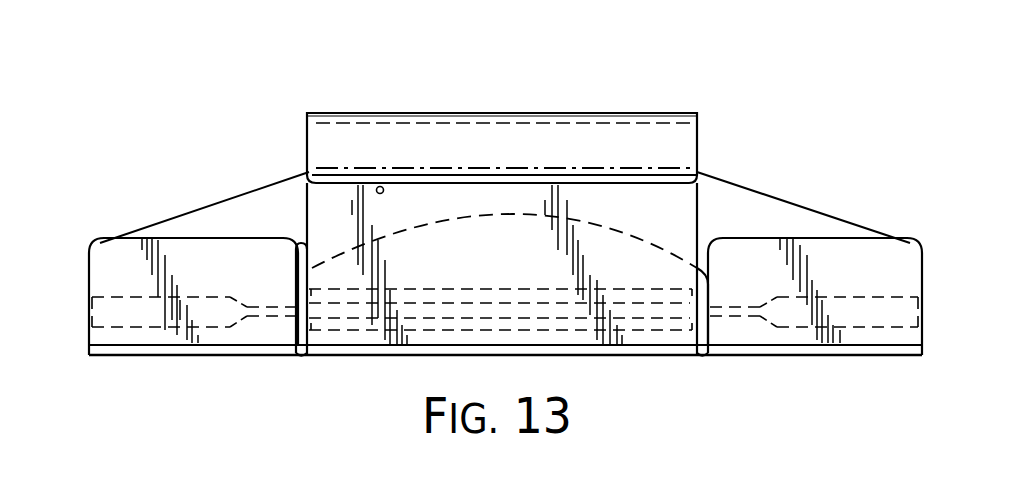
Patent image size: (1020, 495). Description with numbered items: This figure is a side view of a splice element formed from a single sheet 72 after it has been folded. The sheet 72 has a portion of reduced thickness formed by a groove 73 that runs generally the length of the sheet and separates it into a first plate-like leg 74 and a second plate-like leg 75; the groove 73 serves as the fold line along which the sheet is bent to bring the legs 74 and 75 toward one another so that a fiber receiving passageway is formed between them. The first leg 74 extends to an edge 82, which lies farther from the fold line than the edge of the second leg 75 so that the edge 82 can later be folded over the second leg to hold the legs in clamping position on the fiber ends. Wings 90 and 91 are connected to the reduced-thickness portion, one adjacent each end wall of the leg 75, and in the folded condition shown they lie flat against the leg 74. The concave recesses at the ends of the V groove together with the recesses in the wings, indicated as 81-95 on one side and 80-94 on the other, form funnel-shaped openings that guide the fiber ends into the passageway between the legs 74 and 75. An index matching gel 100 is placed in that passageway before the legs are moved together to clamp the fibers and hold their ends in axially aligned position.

The sheet 72 is at (661, 115).
The first plate-like leg 74 is at (690, 143).
The edge 82 is at (379, 187).
The second plate-like leg 75 is at (318, 213).
The groove 73 is at (345, 357).
The wing 91 is at (167, 238).
The wing 90 is at (867, 238).
The concave recess and wing recess 81-95 is at (178, 327).
The concave recess and wing recess 80-94 is at (840, 330).
The index matching gel 100 is at (600, 220).